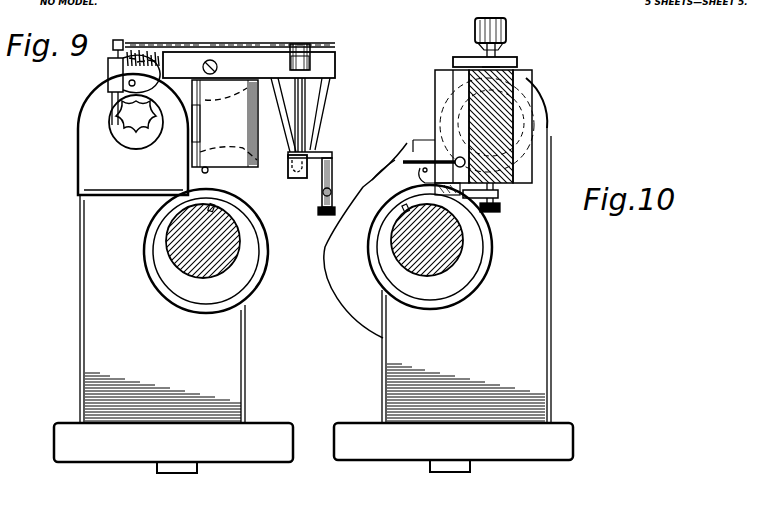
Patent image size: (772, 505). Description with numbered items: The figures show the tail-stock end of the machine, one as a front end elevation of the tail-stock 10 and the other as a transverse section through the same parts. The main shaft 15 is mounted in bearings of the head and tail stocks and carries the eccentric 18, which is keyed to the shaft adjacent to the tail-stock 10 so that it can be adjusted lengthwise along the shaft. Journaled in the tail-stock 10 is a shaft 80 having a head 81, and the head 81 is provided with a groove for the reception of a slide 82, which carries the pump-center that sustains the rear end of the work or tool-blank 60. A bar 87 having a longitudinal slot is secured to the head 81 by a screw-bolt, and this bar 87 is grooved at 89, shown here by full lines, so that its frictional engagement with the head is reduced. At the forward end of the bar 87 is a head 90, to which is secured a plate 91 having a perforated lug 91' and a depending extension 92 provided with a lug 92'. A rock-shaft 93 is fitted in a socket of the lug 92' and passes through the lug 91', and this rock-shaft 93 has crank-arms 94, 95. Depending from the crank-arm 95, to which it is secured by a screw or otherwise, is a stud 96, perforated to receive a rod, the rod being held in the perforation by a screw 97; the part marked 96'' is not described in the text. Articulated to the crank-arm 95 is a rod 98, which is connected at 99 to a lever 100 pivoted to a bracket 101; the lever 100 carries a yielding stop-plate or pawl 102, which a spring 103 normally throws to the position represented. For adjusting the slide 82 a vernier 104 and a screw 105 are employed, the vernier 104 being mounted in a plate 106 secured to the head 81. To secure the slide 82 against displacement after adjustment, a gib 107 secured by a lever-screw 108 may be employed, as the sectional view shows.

In FIG. 9, the tail-stock 10 is at (173, 334).
In FIG. 10, the tail-stock 10 is at (453, 300).
In FIG. 9, the shaft 15 is at (186, 268).
In FIG. 10, the shaft 15 is at (450, 258).
In FIG. 9, the eccentric 18 is at (203, 248).
In FIG. 10, the eccentric 18 is at (427, 248).
In FIG. 9, the work or tool-blank 60 is at (135, 140).
In FIG. 10, the shaft 80 is at (548, 116).
In FIG. 9, the head 81 is at (216, 126).
In FIG. 10, the head 81 is at (522, 92).
In FIG. 10, the slide 82 is at (514, 70).
In FIG. 9, the bar 87 is at (204, 105).
In FIG. 9, the groove 89 is at (204, 130).
In FIG. 9, the head 90 is at (290, 165).
In FIG. 9, the plate 91 is at (249, 65).
In FIG. 9, the perforated lug 91' is at (332, 53).
In FIG. 9, the depending extension 92 is at (313, 115).
In FIG. 9, the lug 92' is at (298, 183).
In FIG. 9, the rock-shaft 93 is at (300, 98).
In FIG. 9, the crank-arm 94 is at (305, 44).
In FIG. 9, the crank-arm 95 is at (302, 155).
In FIG. 9, the stud 96 is at (340, 181).
In FIG. 9, the ball joint 96'' is at (344, 191).
In FIG. 9, the screw 97 is at (325, 215).
In FIG. 9, the rod 98 is at (235, 43).
In FIG. 9, the connection 99 is at (119, 40).
In FIG. 9, the lever 100 is at (108, 70).
In FIG. 9, the bracket 101 is at (142, 77).
In FIG. 9, the yielding stop-plate or pawl 102 is at (110, 113).
In FIG. 9, the spring 103 is at (152, 48).
In FIG. 10, the vernier 104 is at (506, 26).
In FIG. 10, the screw 105 is at (500, 208).
In FIG. 10, the plate 106 is at (456, 57).
In FIG. 10, the gib 107 is at (433, 126).
In FIG. 10, the lever-screw 108 is at (413, 160).